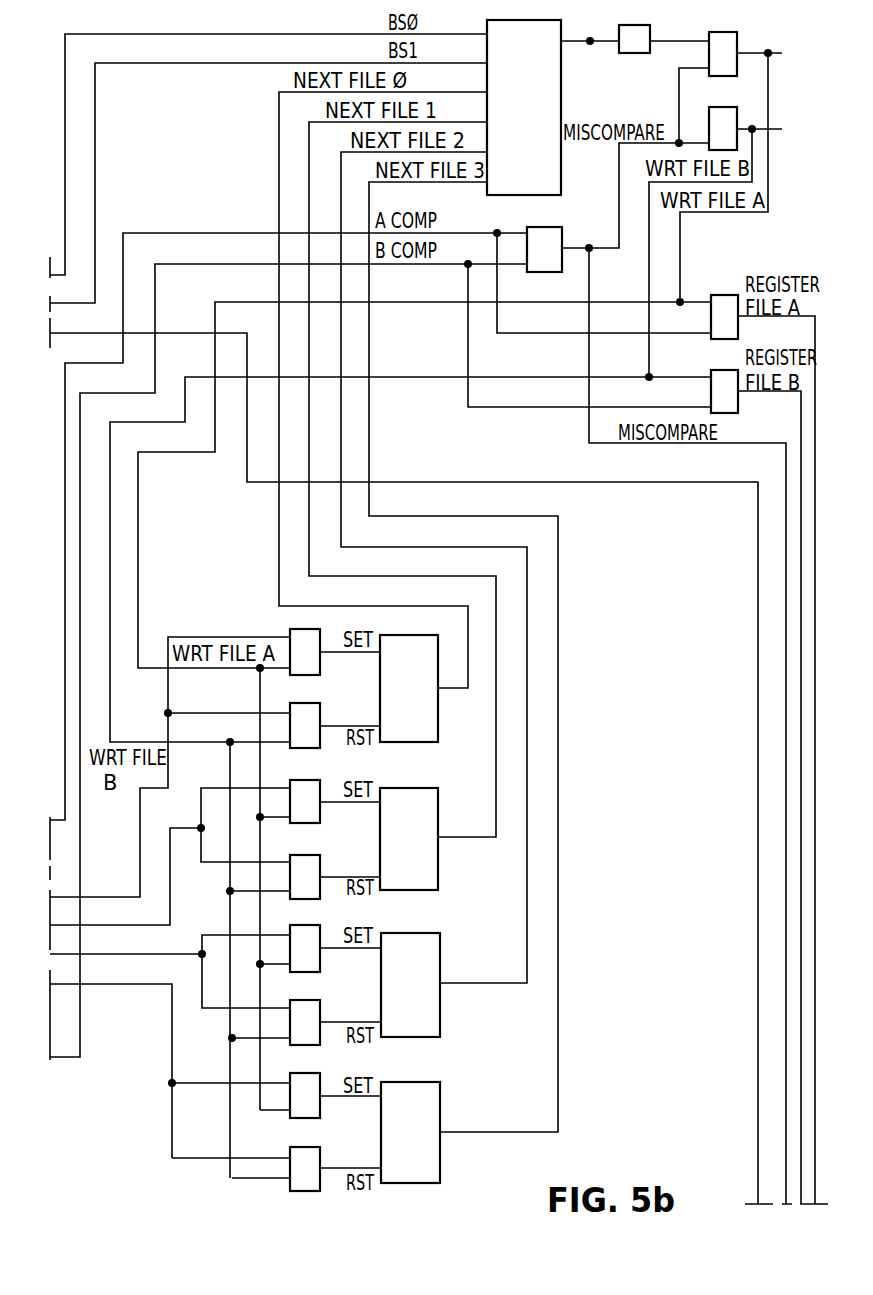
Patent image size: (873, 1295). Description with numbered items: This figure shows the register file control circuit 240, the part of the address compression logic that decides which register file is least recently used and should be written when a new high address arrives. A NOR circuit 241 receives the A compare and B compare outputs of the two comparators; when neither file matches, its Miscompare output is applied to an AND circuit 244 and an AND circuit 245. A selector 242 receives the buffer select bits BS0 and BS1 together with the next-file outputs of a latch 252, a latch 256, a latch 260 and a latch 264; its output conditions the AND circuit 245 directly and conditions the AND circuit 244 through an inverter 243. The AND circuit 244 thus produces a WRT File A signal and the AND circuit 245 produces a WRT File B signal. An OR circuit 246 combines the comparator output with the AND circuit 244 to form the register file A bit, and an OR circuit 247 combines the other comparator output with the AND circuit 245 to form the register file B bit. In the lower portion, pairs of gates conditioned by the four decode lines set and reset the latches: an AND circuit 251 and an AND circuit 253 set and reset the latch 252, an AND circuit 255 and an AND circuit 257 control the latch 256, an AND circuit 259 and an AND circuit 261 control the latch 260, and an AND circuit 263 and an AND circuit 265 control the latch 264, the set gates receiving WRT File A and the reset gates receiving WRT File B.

The register file control circuit 240 is at (652, 26).
The NOR circuit 241 is at (566, 224).
The selector 242 is at (561, 195).
The inverter 243 is at (615, 37).
The AND circuit 244 is at (738, 38).
The AND circuit 245 is at (722, 107).
The OR circuit 246 is at (727, 294).
The OR circuit 247 is at (722, 369).
The AND circuit 251 is at (320, 675).
The latch 252 is at (412, 636).
The AND circuit 253 is at (326, 698).
The AND circuit 255 is at (311, 781).
The latch 256 is at (432, 788).
The AND circuit 257 is at (311, 856).
The AND circuit 259 is at (311, 927).
The latch 260 is at (432, 933).
The AND circuit 261 is at (313, 1001).
The AND circuit 263 is at (312, 1075).
The latch 264 is at (432, 1082).
The AND circuit 265 is at (312, 1149).